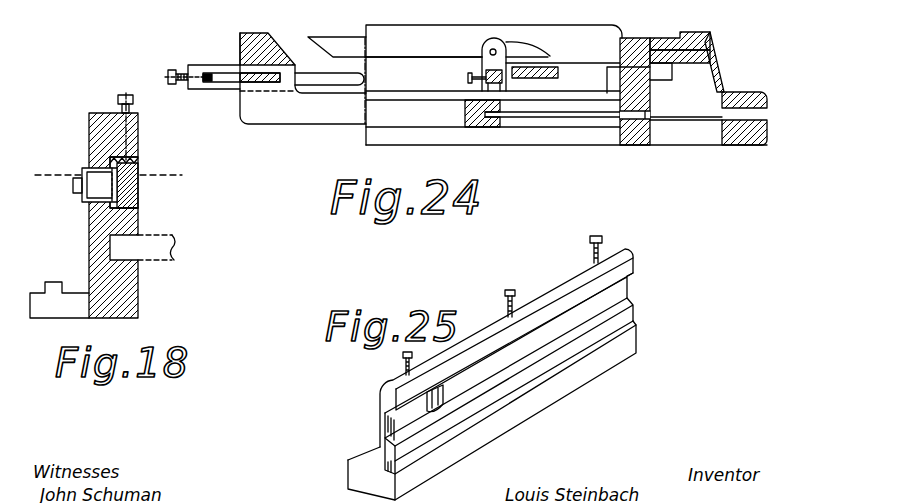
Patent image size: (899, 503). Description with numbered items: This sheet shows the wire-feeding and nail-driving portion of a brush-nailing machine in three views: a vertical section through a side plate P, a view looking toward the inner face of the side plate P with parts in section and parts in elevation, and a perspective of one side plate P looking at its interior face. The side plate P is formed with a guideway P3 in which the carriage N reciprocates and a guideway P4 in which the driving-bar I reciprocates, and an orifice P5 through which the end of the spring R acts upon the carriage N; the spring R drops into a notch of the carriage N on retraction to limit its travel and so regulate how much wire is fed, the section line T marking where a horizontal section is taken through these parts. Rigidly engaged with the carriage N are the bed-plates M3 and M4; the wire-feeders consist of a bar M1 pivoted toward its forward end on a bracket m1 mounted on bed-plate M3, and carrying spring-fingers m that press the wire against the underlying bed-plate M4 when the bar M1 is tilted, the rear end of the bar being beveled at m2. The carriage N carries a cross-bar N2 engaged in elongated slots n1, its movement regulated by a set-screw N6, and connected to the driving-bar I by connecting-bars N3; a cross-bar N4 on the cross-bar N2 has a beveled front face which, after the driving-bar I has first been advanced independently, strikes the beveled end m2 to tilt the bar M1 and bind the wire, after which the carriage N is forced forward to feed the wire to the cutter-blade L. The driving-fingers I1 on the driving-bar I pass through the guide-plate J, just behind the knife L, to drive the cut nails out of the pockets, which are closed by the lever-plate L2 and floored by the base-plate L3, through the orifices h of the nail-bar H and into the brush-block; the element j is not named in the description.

In FIG. 18, the side plate P is at (84, 215).
In FIG. 24, the side plate P is at (603, 29).
In FIG. 25, the side plate P is at (551, 285).
In FIG. 18, the carriage N is at (133, 183).
In FIG. 24, the carriage N is at (335, 73).
In FIG. 18, the spring R is at (78, 203).
In FIG. 18, the driving-bar I is at (165, 247).
In FIG. 24, the driving-bar I is at (482, 121).
In FIG. 18, the section line T is at (108, 174).
In FIG. 24, the cross-bar N2 is at (250, 86).
In FIG. 24, the connecting-bar N3 is at (322, 101).
In FIG. 24, the cross-bar N4 is at (256, 48).
In FIG. 24, the set-screw N6 is at (178, 69).
In FIG. 24, the elongated slot n1 is at (348, 87).
In FIG. 24, the beveled rear end m2 is at (331, 47).
In FIG. 24, the wire-feeder bar M1 is at (424, 47).
In FIG. 24, the bracket m1 is at (497, 49).
In FIG. 24, the spring-finger m is at (563, 52).
In FIG. 24, the bed-plate M3 is at (504, 90).
In FIG. 24, the bed-plate M4 is at (547, 78).
In FIG. 24, the driving-finger I1 is at (603, 125).
In FIG. 24, the pin j is at (613, 64).
In FIG. 24, the guide-plate J is at (630, 138).
In FIG. 24, the cutter-blade L is at (680, 57).
In FIG. 24, the lever-plate L2 is at (725, 62).
In FIG. 24, the base-plate L3 is at (686, 130).
In FIG. 24, the orifice h is at (768, 114).
In FIG. 24, the nail-bar H is at (717, 132).
In FIG. 25, the guideway P3 is at (622, 290).
In FIG. 25, the guideway P4 is at (632, 323).
In FIG. 25, the orifice P5 is at (451, 390).